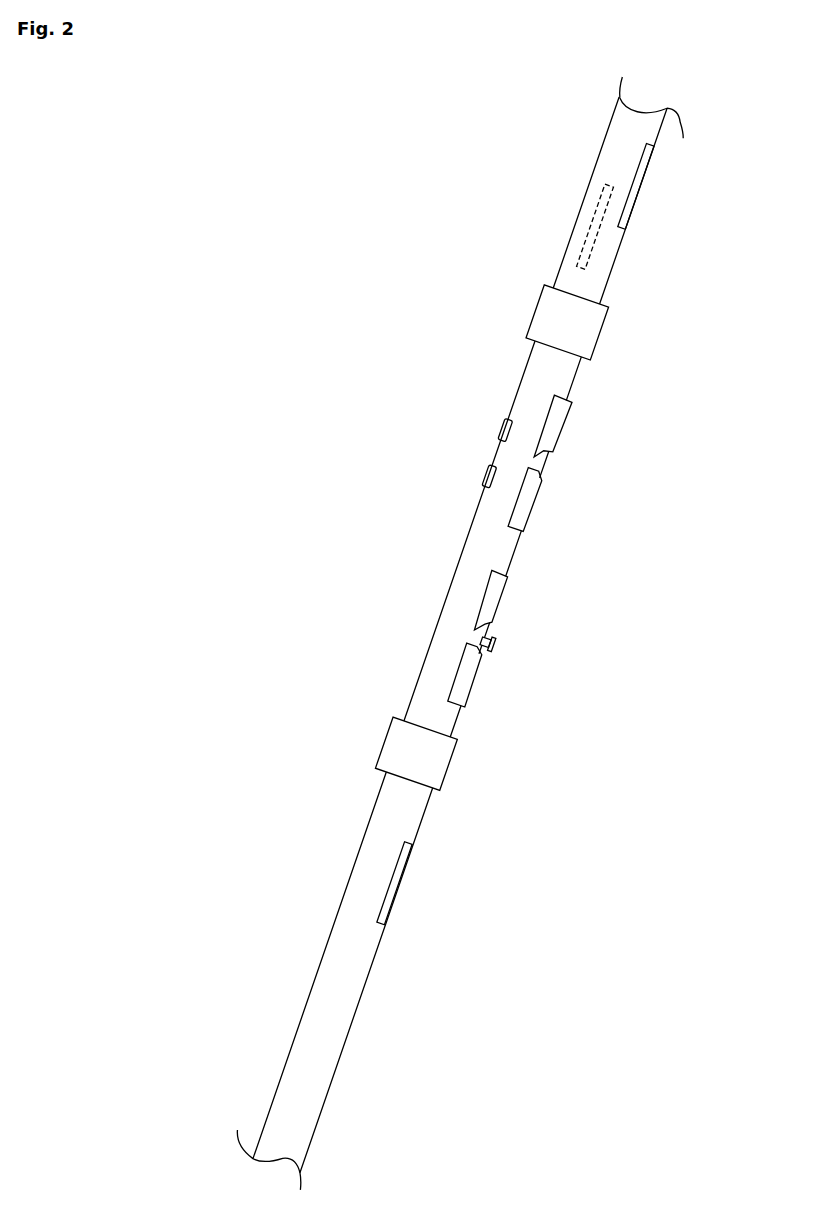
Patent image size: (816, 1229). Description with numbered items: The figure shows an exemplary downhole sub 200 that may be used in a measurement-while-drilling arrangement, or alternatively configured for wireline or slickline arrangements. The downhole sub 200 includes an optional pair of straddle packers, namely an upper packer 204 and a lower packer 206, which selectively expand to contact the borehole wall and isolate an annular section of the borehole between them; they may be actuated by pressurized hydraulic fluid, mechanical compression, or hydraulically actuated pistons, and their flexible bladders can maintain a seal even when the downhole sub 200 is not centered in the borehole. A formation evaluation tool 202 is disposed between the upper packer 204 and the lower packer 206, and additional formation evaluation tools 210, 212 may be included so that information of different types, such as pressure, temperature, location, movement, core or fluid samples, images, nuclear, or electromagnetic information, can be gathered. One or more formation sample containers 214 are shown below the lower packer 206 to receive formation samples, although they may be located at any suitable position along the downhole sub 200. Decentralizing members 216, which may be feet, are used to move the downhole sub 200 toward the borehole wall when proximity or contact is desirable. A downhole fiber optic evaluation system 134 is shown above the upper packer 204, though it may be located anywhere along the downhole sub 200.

The downhole sub 200 is at (601, 787).
The formation evaluation tool 202 is at (498, 642).
The upper packer 204 is at (550, 300).
The lower packer 206 is at (403, 732).
The formation evaluation tool 210 is at (550, 462).
The formation evaluation tool 212 is at (483, 413).
The formation sample container 214 is at (402, 863).
The decentralizing member 216 is at (628, 210).
The downhole fiber optic evaluation system 134 is at (577, 232).